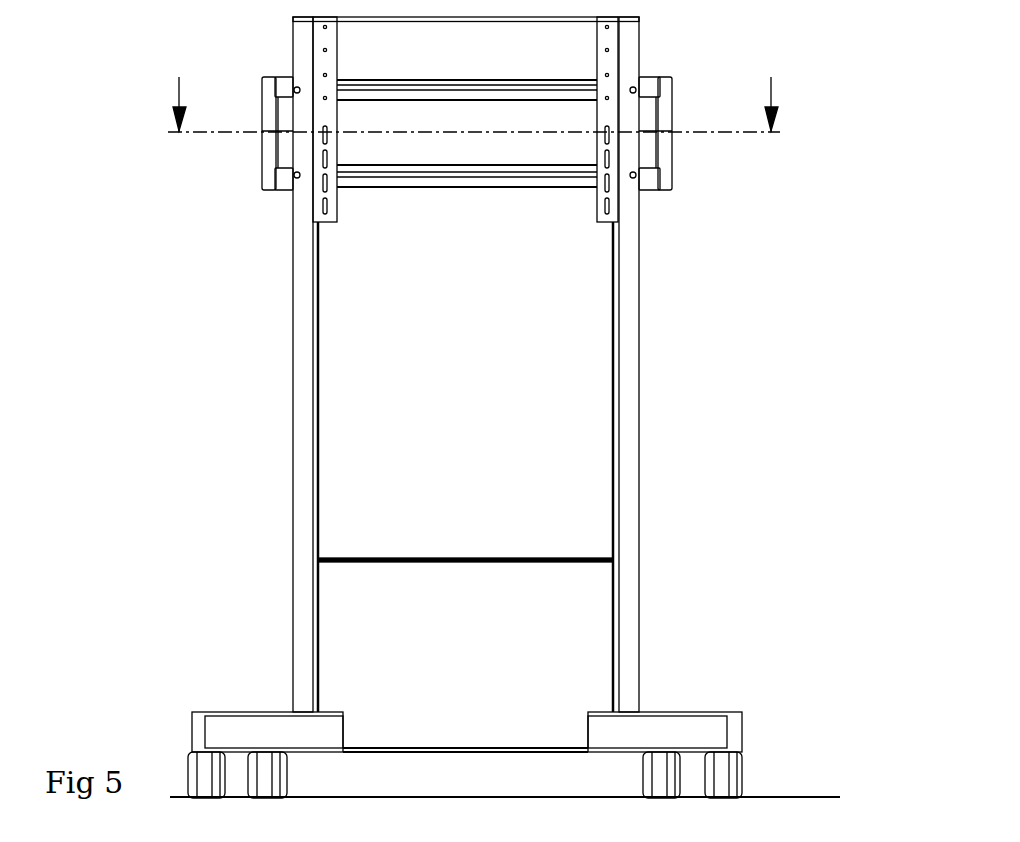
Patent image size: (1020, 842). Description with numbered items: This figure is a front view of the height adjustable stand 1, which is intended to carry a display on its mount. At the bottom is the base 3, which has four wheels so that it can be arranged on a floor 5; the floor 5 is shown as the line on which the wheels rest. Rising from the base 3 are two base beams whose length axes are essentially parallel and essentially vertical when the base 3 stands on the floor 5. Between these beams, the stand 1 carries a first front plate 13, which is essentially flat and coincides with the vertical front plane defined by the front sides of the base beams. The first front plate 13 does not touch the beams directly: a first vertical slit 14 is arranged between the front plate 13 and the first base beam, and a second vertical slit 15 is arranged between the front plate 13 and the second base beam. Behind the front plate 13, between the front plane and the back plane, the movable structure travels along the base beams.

The height adjustable stand 1 is at (227, 438).
The base 3 is at (688, 566).
The floor 5 is at (778, 797).
The first front plate 13 is at (485, 357).
The first vertical slit 14 is at (318, 318).
The second vertical slit 15 is at (614, 327).